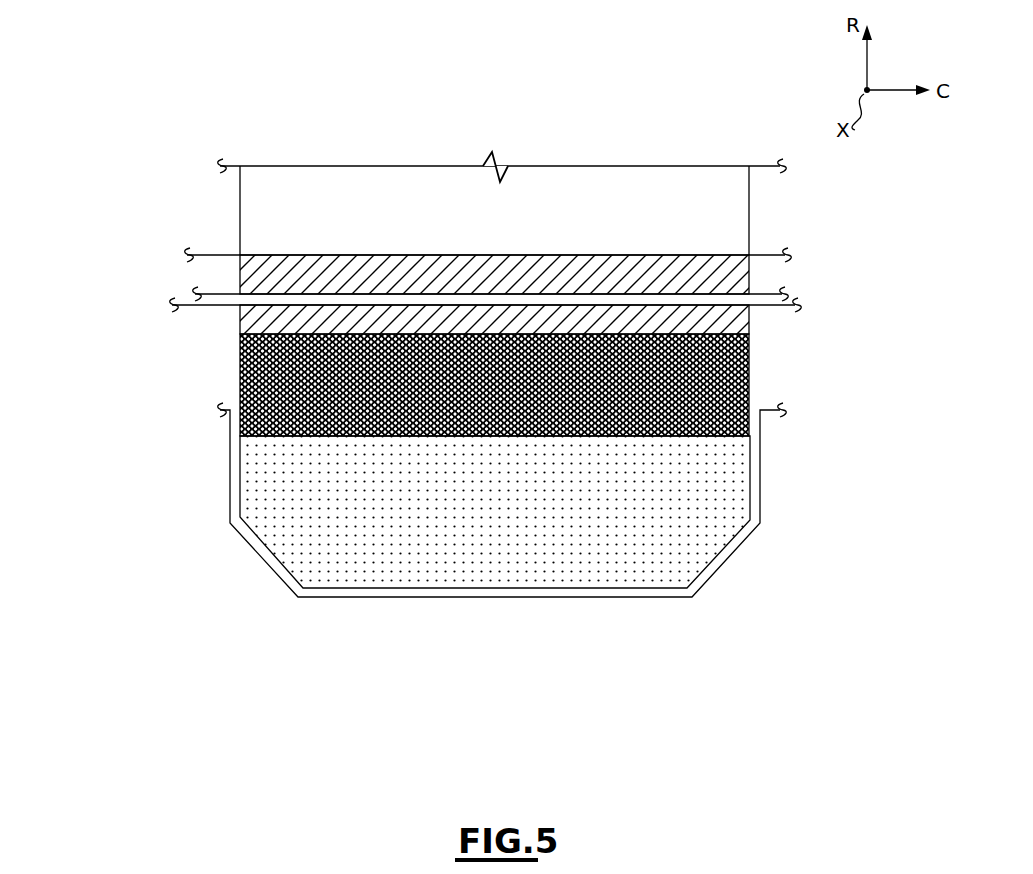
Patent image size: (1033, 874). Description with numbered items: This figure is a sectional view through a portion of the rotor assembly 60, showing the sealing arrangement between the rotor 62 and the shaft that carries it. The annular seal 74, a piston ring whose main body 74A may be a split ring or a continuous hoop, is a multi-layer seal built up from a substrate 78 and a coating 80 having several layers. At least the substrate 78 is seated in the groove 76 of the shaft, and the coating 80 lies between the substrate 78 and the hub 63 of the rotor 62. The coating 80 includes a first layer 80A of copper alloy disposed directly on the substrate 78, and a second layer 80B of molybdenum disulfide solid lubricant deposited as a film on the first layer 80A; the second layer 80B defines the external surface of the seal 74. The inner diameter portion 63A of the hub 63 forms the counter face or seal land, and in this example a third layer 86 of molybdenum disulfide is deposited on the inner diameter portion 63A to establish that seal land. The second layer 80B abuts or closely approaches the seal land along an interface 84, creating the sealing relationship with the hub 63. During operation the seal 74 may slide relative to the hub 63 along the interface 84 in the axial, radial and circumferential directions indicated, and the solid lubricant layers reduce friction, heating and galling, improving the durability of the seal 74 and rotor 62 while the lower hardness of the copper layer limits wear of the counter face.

The rotor assembly 60 is at (122, 79).
The rotor 62 is at (273, 150).
The hub 63 is at (485, 135).
The inner diameter portion 63A is at (255, 208).
The interface 84 is at (745, 273).
The third layer 86 is at (250, 277).
The annular seal 74 is at (389, 370).
The main body 74A is at (141, 347).
The coating 80 is at (160, 380).
The first layer 80A is at (250, 386).
The second layer 80B is at (250, 321).
The substrate 78 is at (268, 492).
The groove 76 is at (478, 593).